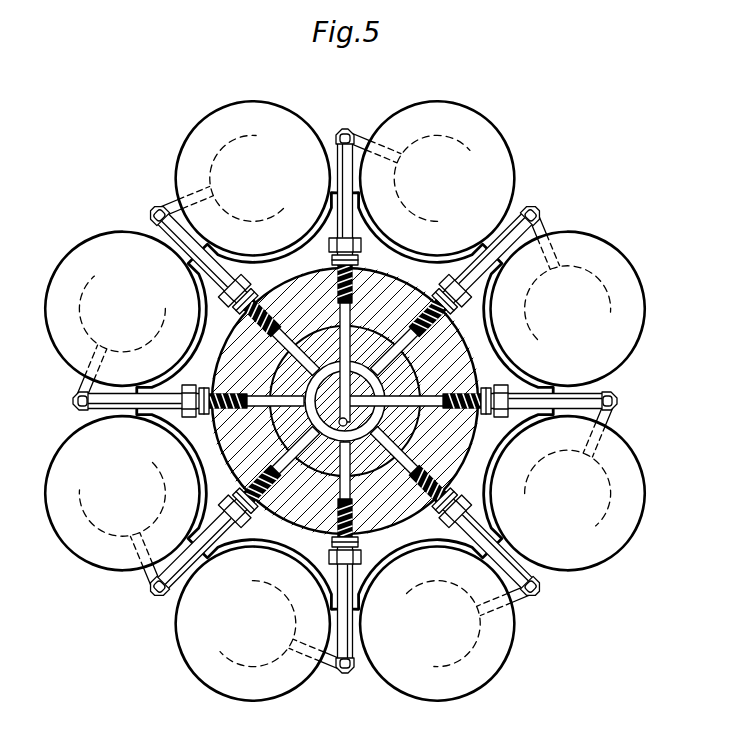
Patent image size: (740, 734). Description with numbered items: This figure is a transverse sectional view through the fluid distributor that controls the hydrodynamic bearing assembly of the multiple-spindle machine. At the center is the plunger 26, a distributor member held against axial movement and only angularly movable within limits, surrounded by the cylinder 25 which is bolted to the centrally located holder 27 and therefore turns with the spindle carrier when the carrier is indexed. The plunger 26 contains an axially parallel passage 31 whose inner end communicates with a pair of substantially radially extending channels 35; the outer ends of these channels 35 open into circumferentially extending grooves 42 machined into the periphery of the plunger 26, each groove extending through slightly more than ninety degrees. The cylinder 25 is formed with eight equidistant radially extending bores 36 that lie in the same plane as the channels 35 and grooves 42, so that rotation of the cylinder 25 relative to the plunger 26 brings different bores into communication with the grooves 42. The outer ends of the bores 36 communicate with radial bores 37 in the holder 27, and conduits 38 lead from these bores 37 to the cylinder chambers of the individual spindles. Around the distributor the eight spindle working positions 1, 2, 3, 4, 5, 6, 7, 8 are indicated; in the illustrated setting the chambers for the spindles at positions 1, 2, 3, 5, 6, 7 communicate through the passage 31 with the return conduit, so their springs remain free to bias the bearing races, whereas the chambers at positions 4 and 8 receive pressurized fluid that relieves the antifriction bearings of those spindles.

The working position one 1 is at (660, 484).
The working position two 2 is at (507, 704).
The working position three 3 is at (309, 719).
The working position four 4 is at (41, 507).
The working position five 5 is at (41, 312).
The working position six 6 is at (301, 104).
The working position seven 7 is at (521, 129).
The working position eight 8 is at (664, 281).
The cylinder 25 is at (337, 427).
The plunger 26 is at (308, 418).
The holder 27 is at (387, 507).
The passage 31 is at (334, 533).
The channels 35 is at (456, 384).
The bores 36 is at (433, 400).
The radial bores 37 is at (408, 340).
The conduits 38 is at (536, 220).
The grooves 42 is at (278, 353).